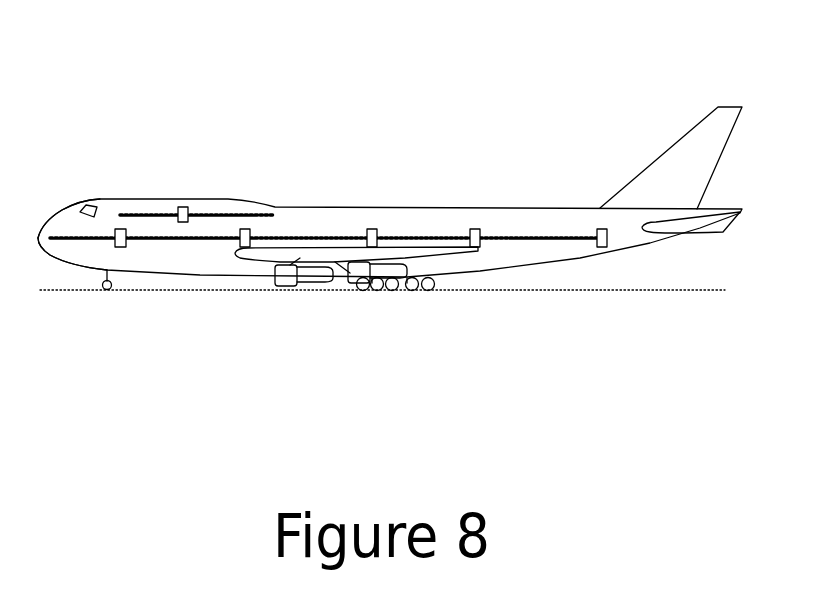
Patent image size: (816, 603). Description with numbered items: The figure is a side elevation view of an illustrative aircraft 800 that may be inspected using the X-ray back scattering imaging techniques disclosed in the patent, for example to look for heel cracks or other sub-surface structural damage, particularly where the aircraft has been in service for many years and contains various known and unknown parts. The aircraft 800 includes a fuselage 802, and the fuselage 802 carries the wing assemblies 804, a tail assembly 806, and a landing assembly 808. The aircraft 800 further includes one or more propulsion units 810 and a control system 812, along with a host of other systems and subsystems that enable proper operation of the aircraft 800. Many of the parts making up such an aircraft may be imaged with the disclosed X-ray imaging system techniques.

The aircraft 800 is at (108, 55).
The fuselage 802 is at (502, 267).
The wing assemblies 804 is at (252, 257).
The tail assembly 806 is at (663, 135).
The landing assembly 808 is at (387, 298).
The propulsion units 810 is at (278, 283).
The control system 812 is at (37, 256).